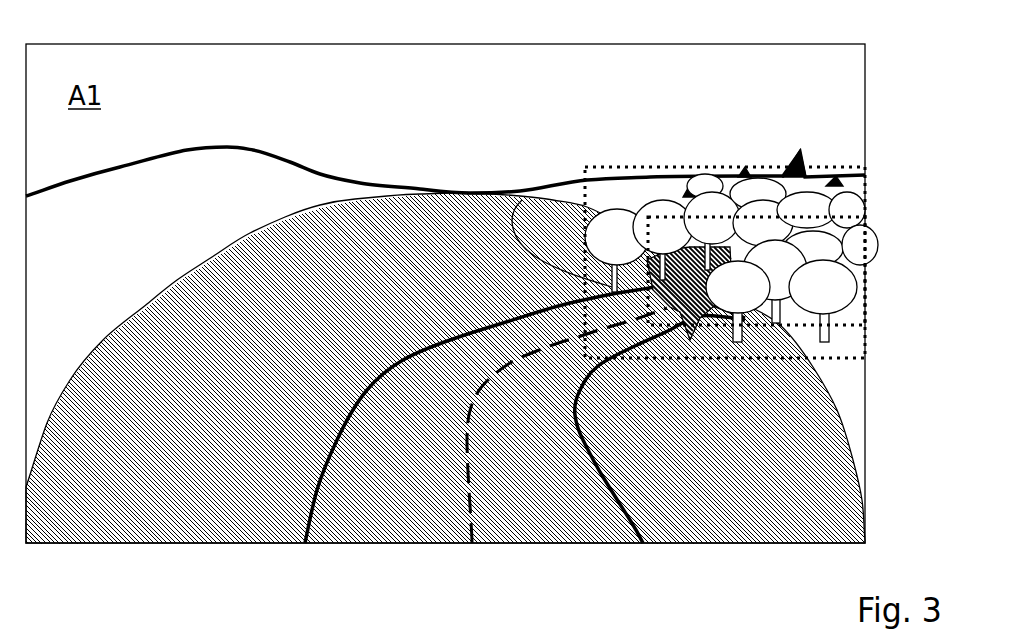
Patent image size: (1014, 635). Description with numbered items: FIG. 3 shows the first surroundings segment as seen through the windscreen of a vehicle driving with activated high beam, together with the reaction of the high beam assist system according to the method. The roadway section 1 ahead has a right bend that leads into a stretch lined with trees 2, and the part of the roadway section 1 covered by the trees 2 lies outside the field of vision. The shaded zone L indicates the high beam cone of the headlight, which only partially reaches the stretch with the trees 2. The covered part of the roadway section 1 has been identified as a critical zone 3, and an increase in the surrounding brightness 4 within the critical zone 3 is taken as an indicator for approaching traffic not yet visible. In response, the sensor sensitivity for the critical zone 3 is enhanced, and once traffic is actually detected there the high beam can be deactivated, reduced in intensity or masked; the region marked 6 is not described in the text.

The roadway section 1 is at (425, 397).
The trees 2 is at (570, 190).
The critical zone 3 is at (707, 215).
The surrounding brightness 4 is at (688, 265).
The sub-region 6 is at (522, 200).
The zone L is at (128, 308).